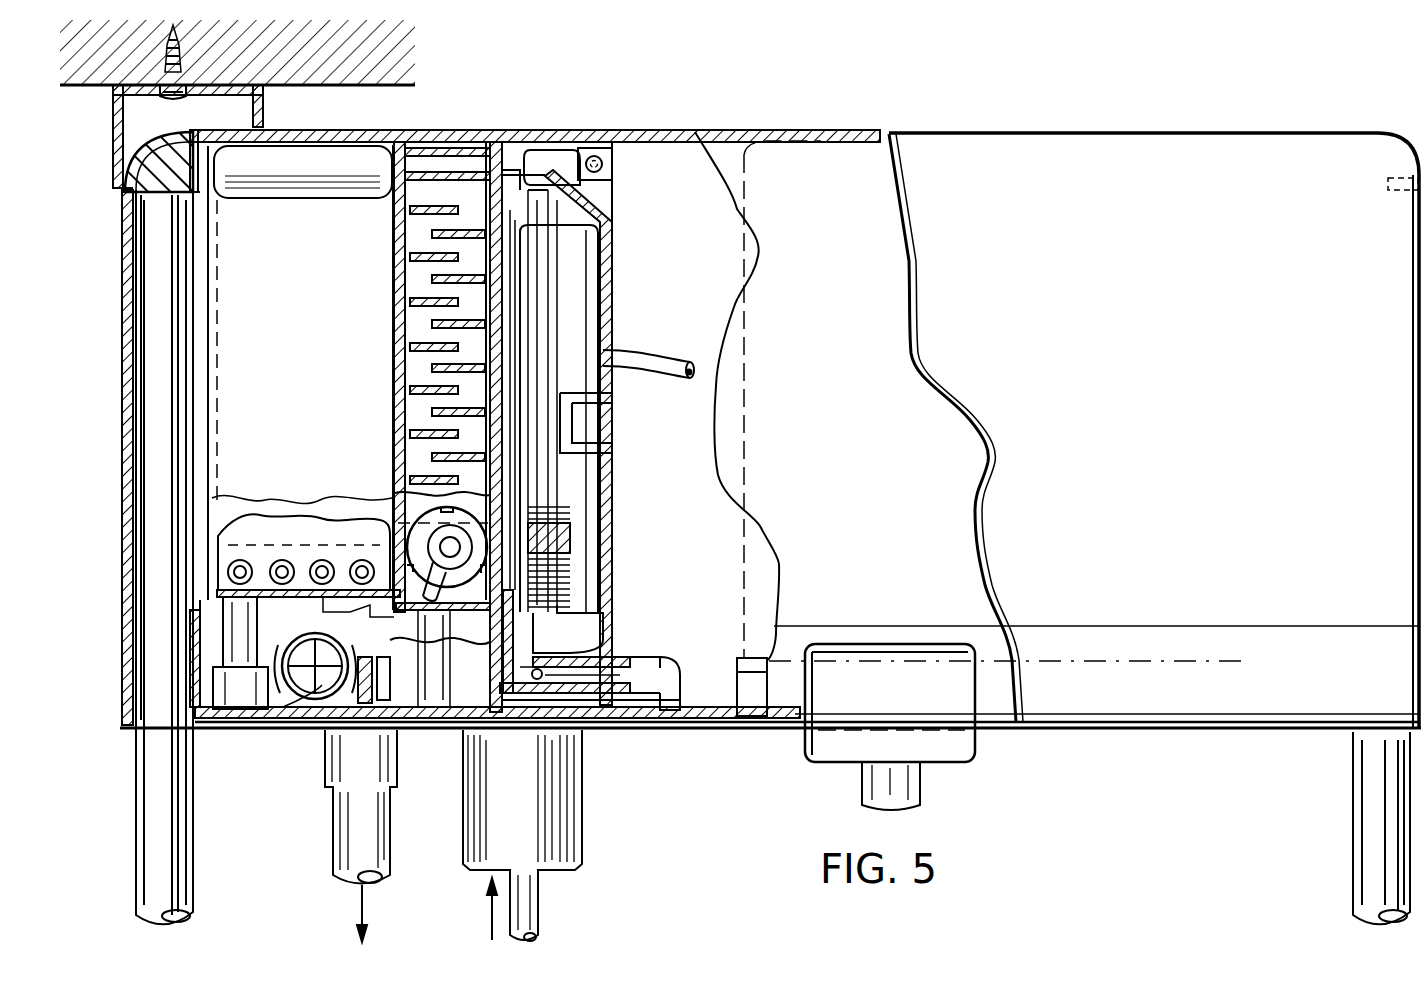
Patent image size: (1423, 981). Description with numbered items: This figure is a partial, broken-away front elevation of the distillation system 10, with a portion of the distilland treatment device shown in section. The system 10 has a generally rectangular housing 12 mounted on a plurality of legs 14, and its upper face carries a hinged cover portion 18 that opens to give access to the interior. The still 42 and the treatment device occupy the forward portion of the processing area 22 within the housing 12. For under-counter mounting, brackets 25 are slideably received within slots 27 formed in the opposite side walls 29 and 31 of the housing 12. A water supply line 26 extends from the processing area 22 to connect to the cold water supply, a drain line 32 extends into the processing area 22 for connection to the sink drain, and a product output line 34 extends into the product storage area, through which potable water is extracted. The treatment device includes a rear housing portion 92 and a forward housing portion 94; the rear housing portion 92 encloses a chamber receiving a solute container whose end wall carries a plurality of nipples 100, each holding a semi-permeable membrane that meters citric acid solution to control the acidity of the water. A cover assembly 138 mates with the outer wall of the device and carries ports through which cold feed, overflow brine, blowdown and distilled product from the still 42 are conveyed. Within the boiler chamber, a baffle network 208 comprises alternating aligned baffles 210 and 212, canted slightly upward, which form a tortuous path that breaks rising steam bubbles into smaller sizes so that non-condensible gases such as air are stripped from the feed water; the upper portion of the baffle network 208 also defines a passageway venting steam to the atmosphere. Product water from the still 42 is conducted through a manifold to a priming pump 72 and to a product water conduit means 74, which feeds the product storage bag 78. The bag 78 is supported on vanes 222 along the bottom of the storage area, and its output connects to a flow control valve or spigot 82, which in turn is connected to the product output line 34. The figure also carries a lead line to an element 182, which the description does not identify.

The distillation system 10 is at (1325, 125).
The housing 12 is at (1153, 296).
The legs 14 is at (180, 828).
The hinged cover portion 18 is at (568, 130).
The processing area 22 is at (642, 183).
The brackets 25 is at (263, 112).
The water supply line 26 is at (538, 915).
The slots 27 is at (155, 135).
The side wall 29 is at (122, 272).
The side wall 31 is at (1415, 292).
The drain line 32 is at (388, 836).
The product output line 34 is at (920, 805).
The still 42 is at (566, 486).
The priming pump 72 is at (284, 720).
The product water conduit means 74 is at (686, 364).
The product storage bag 78 is at (741, 580).
The flow control valve or spigot 82 is at (965, 740).
The rear housing portion 92 is at (295, 388).
The forward housing portion 94 is at (503, 322).
The nipples 100 is at (240, 560).
The cover assembly 138 is at (537, 358).
The inclined wall 182 is at (625, 258).
The baffle network 208 is at (458, 142).
The baffles 210 is at (445, 296).
The baffles 212 is at (440, 410).
The vanes 222 is at (745, 660).